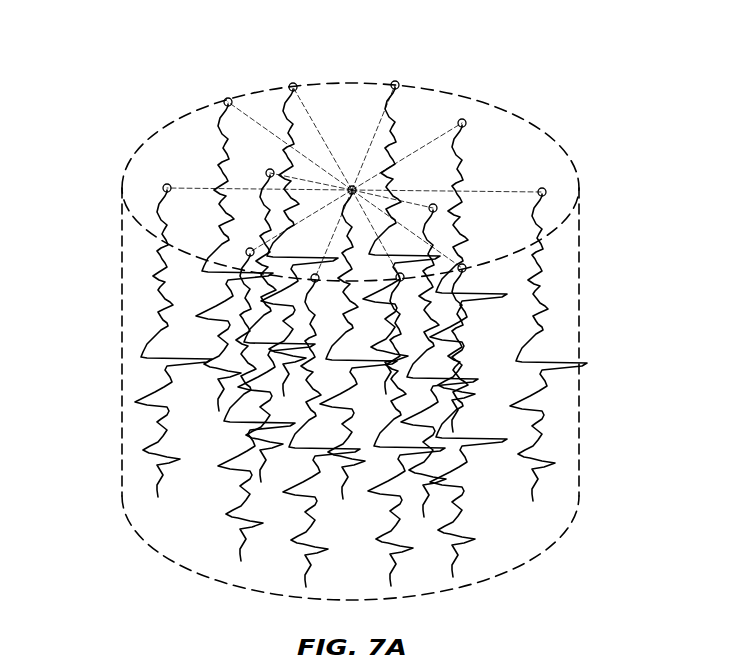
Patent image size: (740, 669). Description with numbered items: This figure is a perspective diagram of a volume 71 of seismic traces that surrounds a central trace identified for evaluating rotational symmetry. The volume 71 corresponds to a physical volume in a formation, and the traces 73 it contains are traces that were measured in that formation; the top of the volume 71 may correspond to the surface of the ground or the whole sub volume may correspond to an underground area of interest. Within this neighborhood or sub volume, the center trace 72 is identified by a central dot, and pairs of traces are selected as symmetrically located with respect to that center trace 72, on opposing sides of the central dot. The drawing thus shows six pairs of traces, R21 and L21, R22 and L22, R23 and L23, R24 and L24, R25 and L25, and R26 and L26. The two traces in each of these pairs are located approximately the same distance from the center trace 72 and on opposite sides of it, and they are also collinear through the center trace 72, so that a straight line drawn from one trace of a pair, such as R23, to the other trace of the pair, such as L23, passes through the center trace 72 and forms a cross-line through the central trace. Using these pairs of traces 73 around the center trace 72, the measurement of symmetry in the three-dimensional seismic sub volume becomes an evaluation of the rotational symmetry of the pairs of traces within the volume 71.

The volume 71 is at (120, 338).
The center trace 72 is at (357, 188).
The traces 73 is at (540, 320).
The trace L21 is at (276, 170).
The trace L22 is at (249, 247).
The trace L23 is at (166, 183).
The trace L24 is at (228, 98).
The trace L25 is at (293, 82).
The trace L26 is at (314, 273).
The trace R21 is at (436, 203).
The trace R22 is at (464, 118).
The trace R23 is at (547, 190).
The trace R24 is at (462, 263).
The trace R25 is at (404, 281).
The trace R26 is at (396, 80).